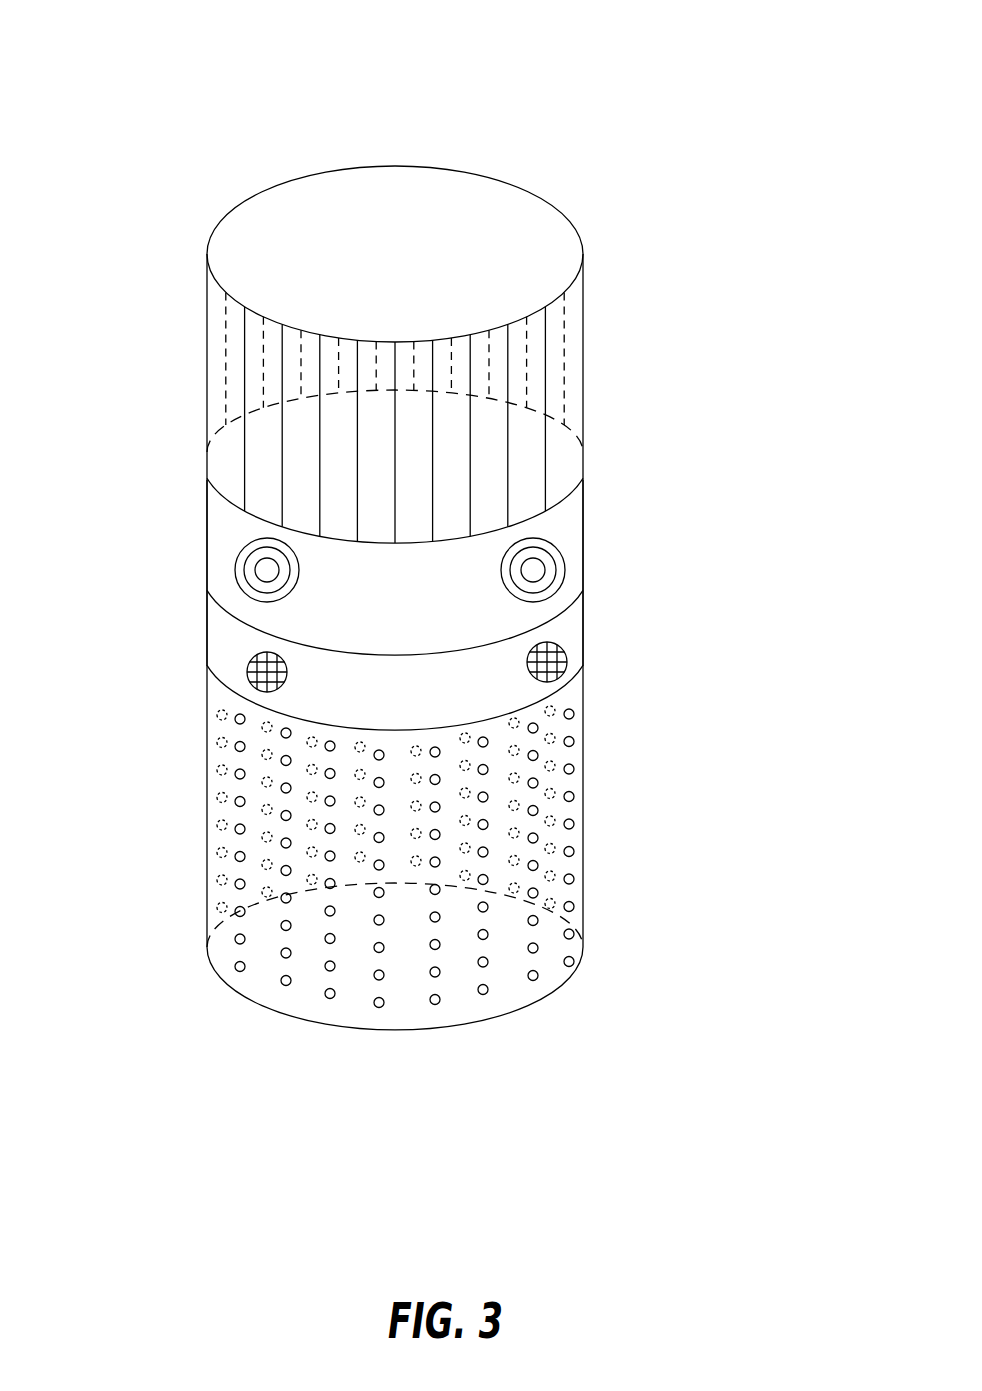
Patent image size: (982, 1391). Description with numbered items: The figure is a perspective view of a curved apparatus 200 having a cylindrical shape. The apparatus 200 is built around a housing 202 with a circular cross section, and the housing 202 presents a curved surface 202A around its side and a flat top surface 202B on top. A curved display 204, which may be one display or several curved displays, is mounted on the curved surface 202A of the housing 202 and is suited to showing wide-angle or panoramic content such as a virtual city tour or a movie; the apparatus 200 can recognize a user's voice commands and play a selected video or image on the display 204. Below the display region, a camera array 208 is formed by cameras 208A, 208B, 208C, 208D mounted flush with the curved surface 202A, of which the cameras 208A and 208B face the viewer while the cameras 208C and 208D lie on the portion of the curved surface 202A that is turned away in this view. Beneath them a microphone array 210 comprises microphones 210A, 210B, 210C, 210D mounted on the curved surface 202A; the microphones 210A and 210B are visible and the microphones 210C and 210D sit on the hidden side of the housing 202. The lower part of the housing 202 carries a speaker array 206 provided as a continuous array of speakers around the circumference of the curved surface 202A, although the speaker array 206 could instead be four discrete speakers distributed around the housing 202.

The curved apparatus 200 is at (413, 29).
The housing 202 is at (415, 322).
The curved surface 202A is at (207, 355).
The top surface 202B is at (433, 197).
The curved display 204 is at (562, 413).
The speaker array 206 is at (507, 827).
The camera array 208 is at (412, 528).
The camera 208A is at (237, 555).
The camera 208B is at (537, 540).
The camera 208C is at (583, 513).
The camera 208D is at (207, 503).
The microphone array 210 is at (445, 621).
The microphone 210A is at (247, 670).
The microphone 210B is at (567, 660).
The microphone 210C is at (583, 652).
The microphone 210D is at (207, 635).